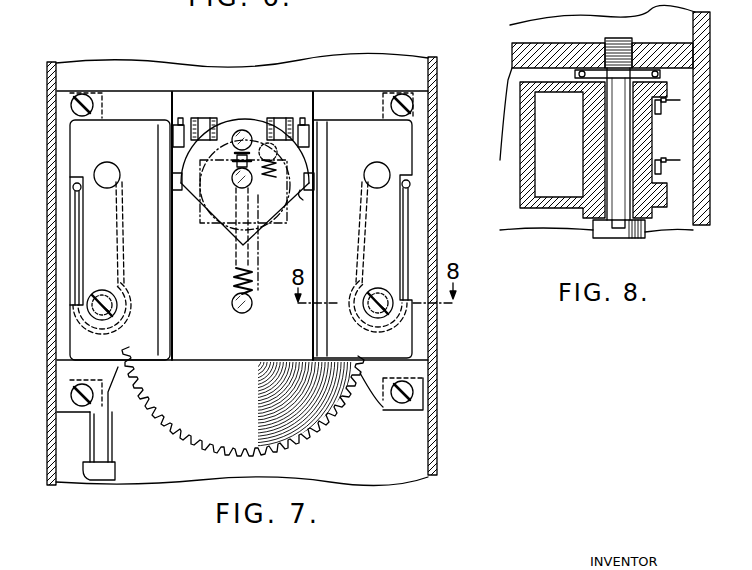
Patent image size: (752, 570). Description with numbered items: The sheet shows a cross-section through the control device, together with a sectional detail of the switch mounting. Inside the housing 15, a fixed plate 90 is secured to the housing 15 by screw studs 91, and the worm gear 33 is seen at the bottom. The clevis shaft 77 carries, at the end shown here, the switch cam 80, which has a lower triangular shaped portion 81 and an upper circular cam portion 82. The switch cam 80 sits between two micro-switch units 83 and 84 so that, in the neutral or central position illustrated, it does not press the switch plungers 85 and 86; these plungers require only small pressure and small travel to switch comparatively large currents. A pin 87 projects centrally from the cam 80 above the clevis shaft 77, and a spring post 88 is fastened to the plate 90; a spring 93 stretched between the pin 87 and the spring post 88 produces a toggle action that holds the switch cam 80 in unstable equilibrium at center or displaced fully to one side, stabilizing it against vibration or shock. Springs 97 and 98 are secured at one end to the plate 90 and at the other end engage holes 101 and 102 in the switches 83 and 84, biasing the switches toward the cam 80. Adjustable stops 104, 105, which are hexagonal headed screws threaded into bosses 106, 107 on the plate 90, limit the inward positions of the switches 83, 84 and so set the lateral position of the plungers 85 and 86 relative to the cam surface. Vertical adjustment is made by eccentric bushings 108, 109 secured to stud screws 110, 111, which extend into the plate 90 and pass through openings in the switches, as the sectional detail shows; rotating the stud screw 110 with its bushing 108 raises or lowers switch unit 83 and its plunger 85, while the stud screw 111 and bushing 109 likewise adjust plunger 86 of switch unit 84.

In FIG. 7, the housing 15 is at (47, 438).
In FIG. 8, the housing 15 is at (701, 190).
In FIG. 7, the worm gear 33 is at (314, 434).
In FIG. 7, the clevis shaft 77 is at (242, 207).
In FIG. 7, the switch cam 80 is at (246, 186).
In FIG. 7, the lower triangular shaped portion 81 is at (294, 204).
In FIG. 7, the upper circular cam portion 82 is at (234, 121).
In FIG. 7, the switch unit 83 is at (400, 147).
In FIG. 8, the switch unit 83 is at (556, 212).
In FIG. 7, the switch unit 84 is at (82, 147).
In FIG. 7, the switch plunger 85 is at (307, 193).
In FIG. 7, the switch plunger 86 is at (184, 192).
In FIG. 7, the pin 87 is at (244, 137).
In FIG. 7, the spring post 88 is at (252, 303).
In FIG. 7, the fixed plate 90 is at (70, 240).
In FIG. 8, the fixed plate 90 is at (557, 52).
In FIG. 7, the screw stud 91 is at (72, 105).
In FIG. 7, the spring 93 is at (234, 281).
In FIG. 7, the spring 97 is at (410, 202).
In FIG. 8, the spring 97 is at (660, 75).
In FIG. 7, the spring 98 is at (76, 204).
In FIG. 7, the hole 101 is at (372, 167).
In FIG. 7, the hole 102 is at (103, 168).
In FIG. 7, the adjustable stop 104 is at (301, 120).
In FIG. 7, the adjustable stop 105 is at (182, 118).
In FIG. 7, the boss 106 is at (193, 117).
In FIG. 7, the boss 107 is at (288, 119).
In FIG. 7, the eccentric bushing 108 is at (380, 319).
In FIG. 8, the eccentric bushing 108 is at (591, 219).
In FIG. 7, the eccentric bushing 109 is at (117, 318).
In FIG. 7, the stud screw 110 is at (395, 275).
In FIG. 8, the stud screw 110 is at (643, 231).
In FIG. 7, the stud screw 111 is at (99, 291).